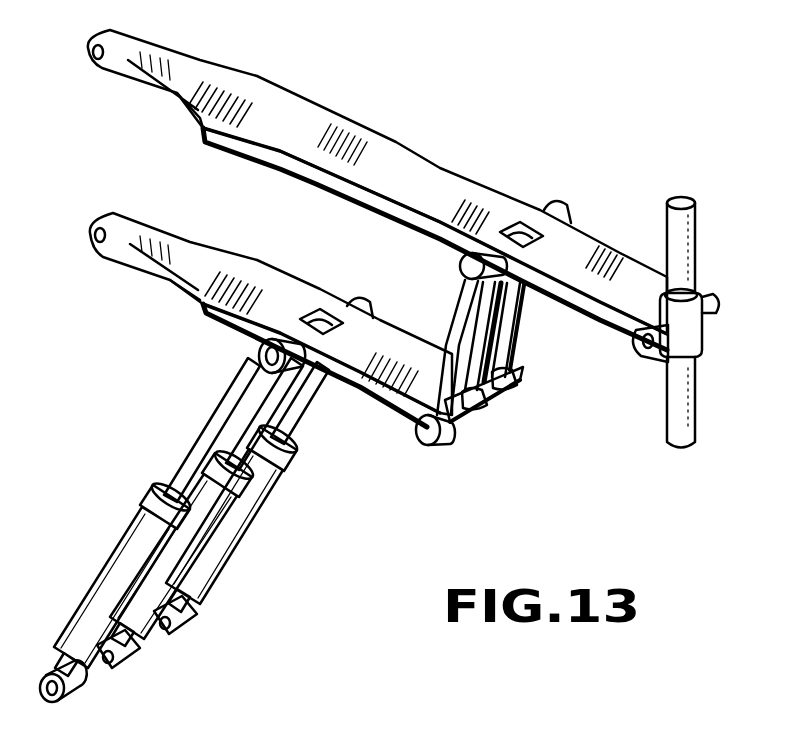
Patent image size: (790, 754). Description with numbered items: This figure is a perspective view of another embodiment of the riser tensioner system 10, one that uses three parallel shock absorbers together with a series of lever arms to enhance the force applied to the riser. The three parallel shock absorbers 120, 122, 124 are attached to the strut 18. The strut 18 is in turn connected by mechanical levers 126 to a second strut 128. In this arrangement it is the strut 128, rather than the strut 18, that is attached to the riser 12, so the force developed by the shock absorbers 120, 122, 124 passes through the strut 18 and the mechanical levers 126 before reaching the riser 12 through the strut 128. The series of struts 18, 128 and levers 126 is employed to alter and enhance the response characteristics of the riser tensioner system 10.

The riser tensioner system 10 is at (689, 168).
The riser 12 is at (696, 233).
The strut 18 is at (248, 258).
The strut 128 is at (443, 168).
The mechanical levers 126 is at (530, 352).
The shock absorber 124 is at (227, 560).
The shock absorber 122 is at (140, 632).
The shock absorber 120 is at (85, 660).